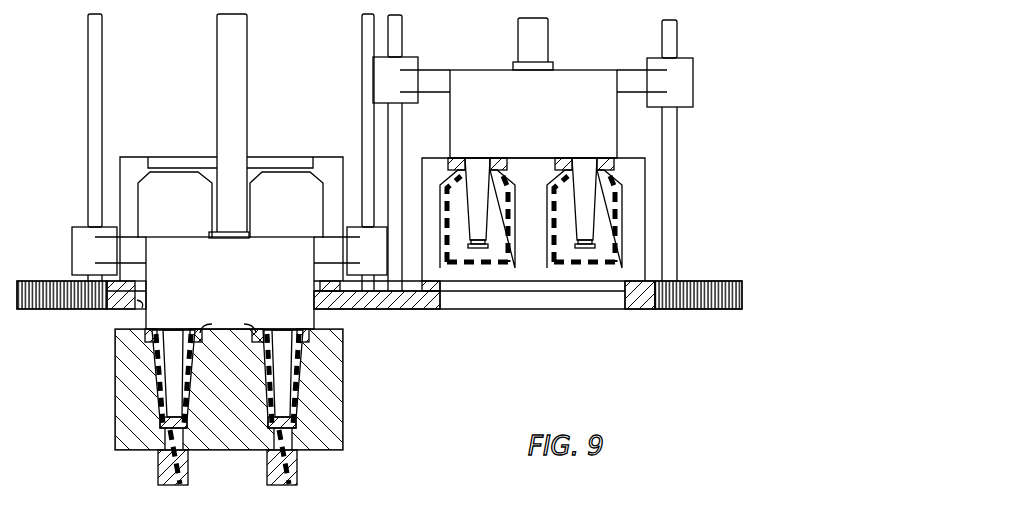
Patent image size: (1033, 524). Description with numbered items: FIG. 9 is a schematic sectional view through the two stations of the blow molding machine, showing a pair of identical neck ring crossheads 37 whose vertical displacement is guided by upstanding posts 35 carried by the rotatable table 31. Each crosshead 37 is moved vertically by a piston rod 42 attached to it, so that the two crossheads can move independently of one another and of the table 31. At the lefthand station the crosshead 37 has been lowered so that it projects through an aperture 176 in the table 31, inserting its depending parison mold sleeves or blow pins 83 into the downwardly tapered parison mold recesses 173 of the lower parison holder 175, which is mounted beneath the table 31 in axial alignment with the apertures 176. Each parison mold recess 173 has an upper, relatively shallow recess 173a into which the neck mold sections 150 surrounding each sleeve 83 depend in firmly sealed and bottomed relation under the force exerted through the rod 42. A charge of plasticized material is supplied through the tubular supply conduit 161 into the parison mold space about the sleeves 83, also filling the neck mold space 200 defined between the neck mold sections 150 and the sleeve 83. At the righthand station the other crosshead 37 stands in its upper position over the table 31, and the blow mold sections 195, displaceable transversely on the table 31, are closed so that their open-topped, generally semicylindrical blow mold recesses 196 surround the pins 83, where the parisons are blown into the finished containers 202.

The table 31 is at (703, 310).
The posts 35 is at (88, 93).
The neck ring crosshead 37 is at (222, 284).
The piston rod 42 is at (217, 22).
The parison mold sleeve 83 is at (297, 396).
The neck mold 150 is at (228, 318).
The supply conduit 161 is at (267, 474).
The parison mold recess 173 is at (158, 392).
The upper shallow recess 173a is at (306, 333).
The parison holder 175 is at (333, 441).
The table aperture 176 is at (140, 306).
The blow mold section 195 is at (146, 150).
The blow mold recess 196 is at (182, 220).
The neck mold space 200 is at (162, 340).
The finished container 202 is at (500, 178).